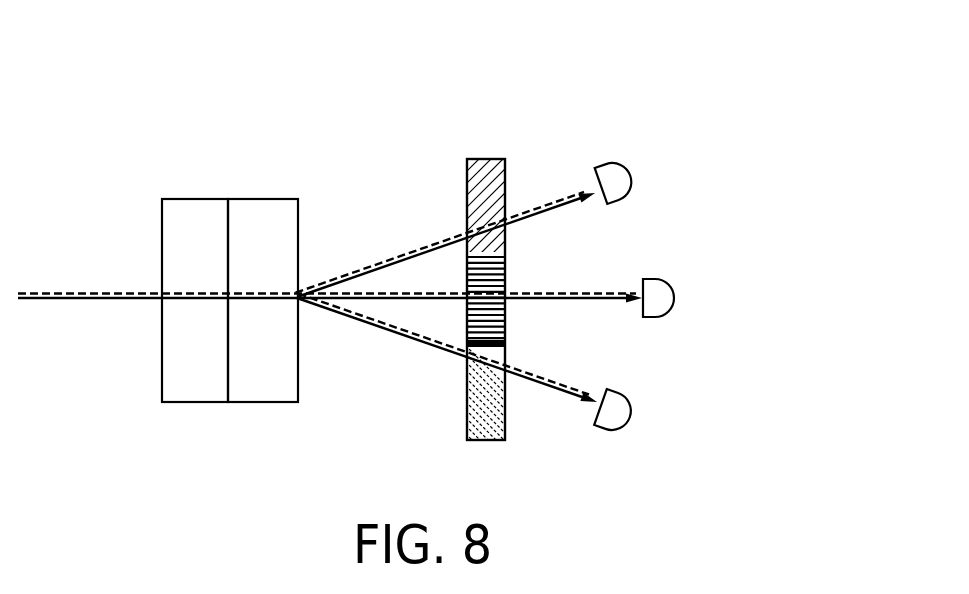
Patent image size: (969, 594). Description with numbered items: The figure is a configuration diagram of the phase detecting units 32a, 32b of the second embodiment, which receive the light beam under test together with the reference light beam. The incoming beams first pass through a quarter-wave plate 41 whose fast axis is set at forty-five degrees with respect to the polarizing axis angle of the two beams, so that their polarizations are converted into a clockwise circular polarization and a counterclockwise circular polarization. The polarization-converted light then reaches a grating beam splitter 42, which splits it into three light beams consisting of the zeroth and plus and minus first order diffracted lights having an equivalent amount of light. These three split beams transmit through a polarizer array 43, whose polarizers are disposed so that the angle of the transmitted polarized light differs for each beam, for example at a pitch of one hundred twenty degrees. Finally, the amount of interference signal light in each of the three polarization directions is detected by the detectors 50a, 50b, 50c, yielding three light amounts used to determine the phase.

The phase detecting unit 32a is at (688, 66).
The phase detecting unit 32b is at (618, 125).
The λ/4 plate 41 is at (162, 367).
The grating beam splitter 42 is at (252, 402).
The polarizer array 43 is at (467, 400).
The detector 50a is at (617, 180).
The detector 50b is at (662, 299).
The detector 50c is at (618, 413).